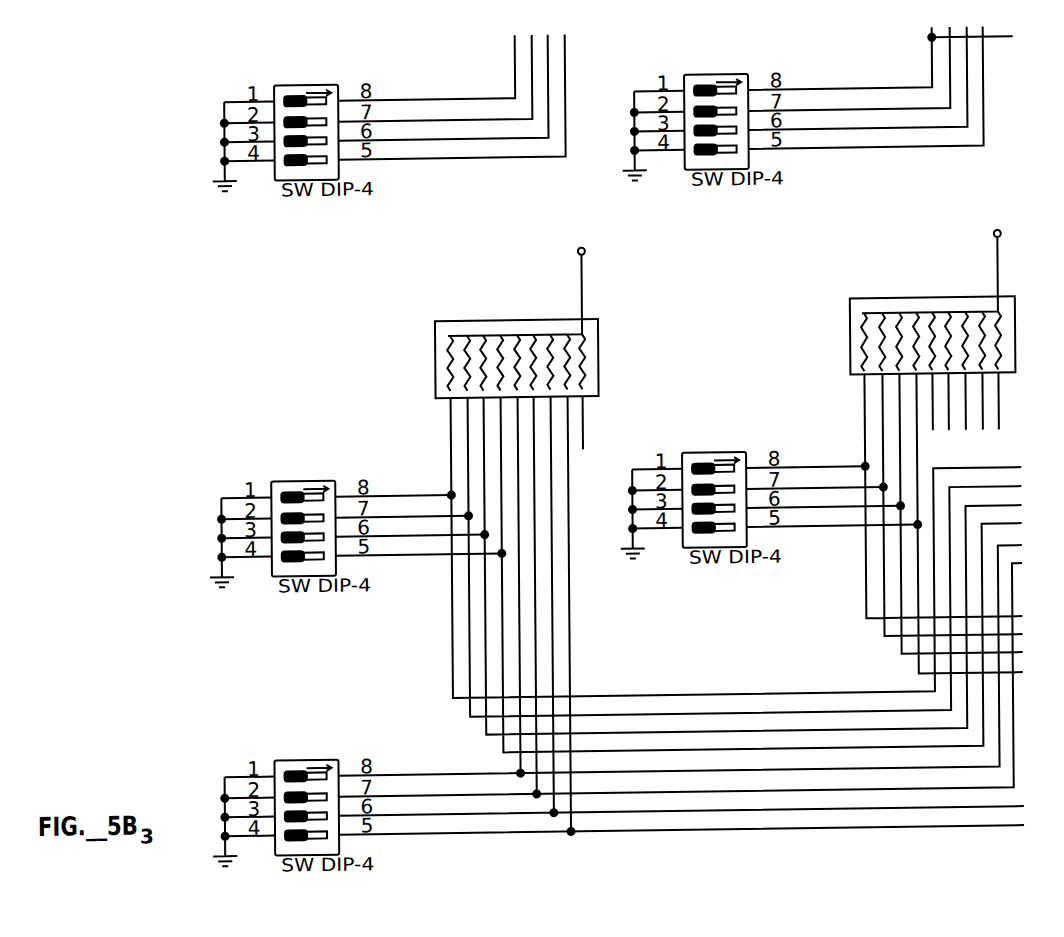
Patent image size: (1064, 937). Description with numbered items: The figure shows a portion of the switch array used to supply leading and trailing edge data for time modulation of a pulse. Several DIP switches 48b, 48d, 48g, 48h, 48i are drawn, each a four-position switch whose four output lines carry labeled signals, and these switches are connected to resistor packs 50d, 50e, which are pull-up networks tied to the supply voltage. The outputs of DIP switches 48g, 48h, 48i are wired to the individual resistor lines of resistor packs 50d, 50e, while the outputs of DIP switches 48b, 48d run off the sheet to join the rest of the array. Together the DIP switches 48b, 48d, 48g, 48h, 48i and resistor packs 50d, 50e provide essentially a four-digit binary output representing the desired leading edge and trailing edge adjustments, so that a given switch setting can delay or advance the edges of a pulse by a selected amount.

The DIP switch 48b is at (278, 82).
The DIP switch 48d is at (689, 76).
The DIP switch 48g is at (272, 477).
The DIP switch 48h is at (272, 757).
The DIP switch 48i is at (682, 454).
The resistor pack 50d is at (484, 319).
The resistor pack 50e is at (930, 302).